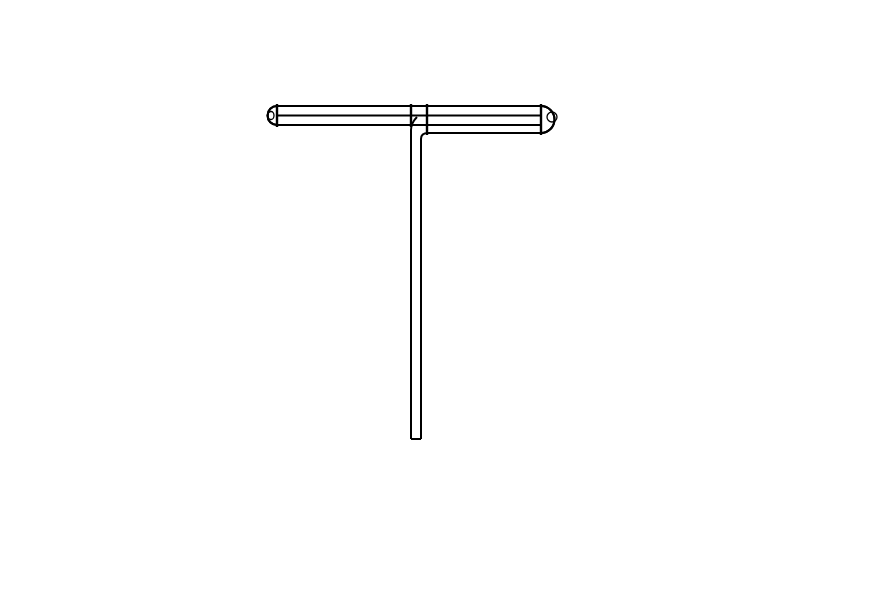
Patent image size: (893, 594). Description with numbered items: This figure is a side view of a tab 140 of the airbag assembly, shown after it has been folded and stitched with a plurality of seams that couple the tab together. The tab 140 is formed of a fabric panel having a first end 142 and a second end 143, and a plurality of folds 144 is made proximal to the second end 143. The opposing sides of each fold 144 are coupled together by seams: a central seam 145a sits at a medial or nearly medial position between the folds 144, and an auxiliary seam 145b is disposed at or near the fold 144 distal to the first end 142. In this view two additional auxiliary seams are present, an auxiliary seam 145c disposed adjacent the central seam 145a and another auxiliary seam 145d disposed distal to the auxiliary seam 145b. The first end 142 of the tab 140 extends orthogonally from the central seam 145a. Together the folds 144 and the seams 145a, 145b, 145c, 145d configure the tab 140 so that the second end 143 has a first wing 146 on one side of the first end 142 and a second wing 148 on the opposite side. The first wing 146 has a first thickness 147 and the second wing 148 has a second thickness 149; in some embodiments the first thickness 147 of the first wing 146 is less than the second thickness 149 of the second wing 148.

The tab 140 is at (127, 106).
The first end 142 is at (411, 422).
The second end 143 is at (552, 116).
The folds 144 is at (270, 108).
The central seam 145a is at (427, 106).
The auxiliary seam 145b is at (541, 106).
The auxiliary seam 145c is at (410, 106).
The auxiliary seam 145d is at (276, 106).
The first wing 146 is at (315, 128).
The first thickness 147 is at (266, 115).
The second wing 148 is at (528, 135).
The second thickness 149 is at (560, 123).